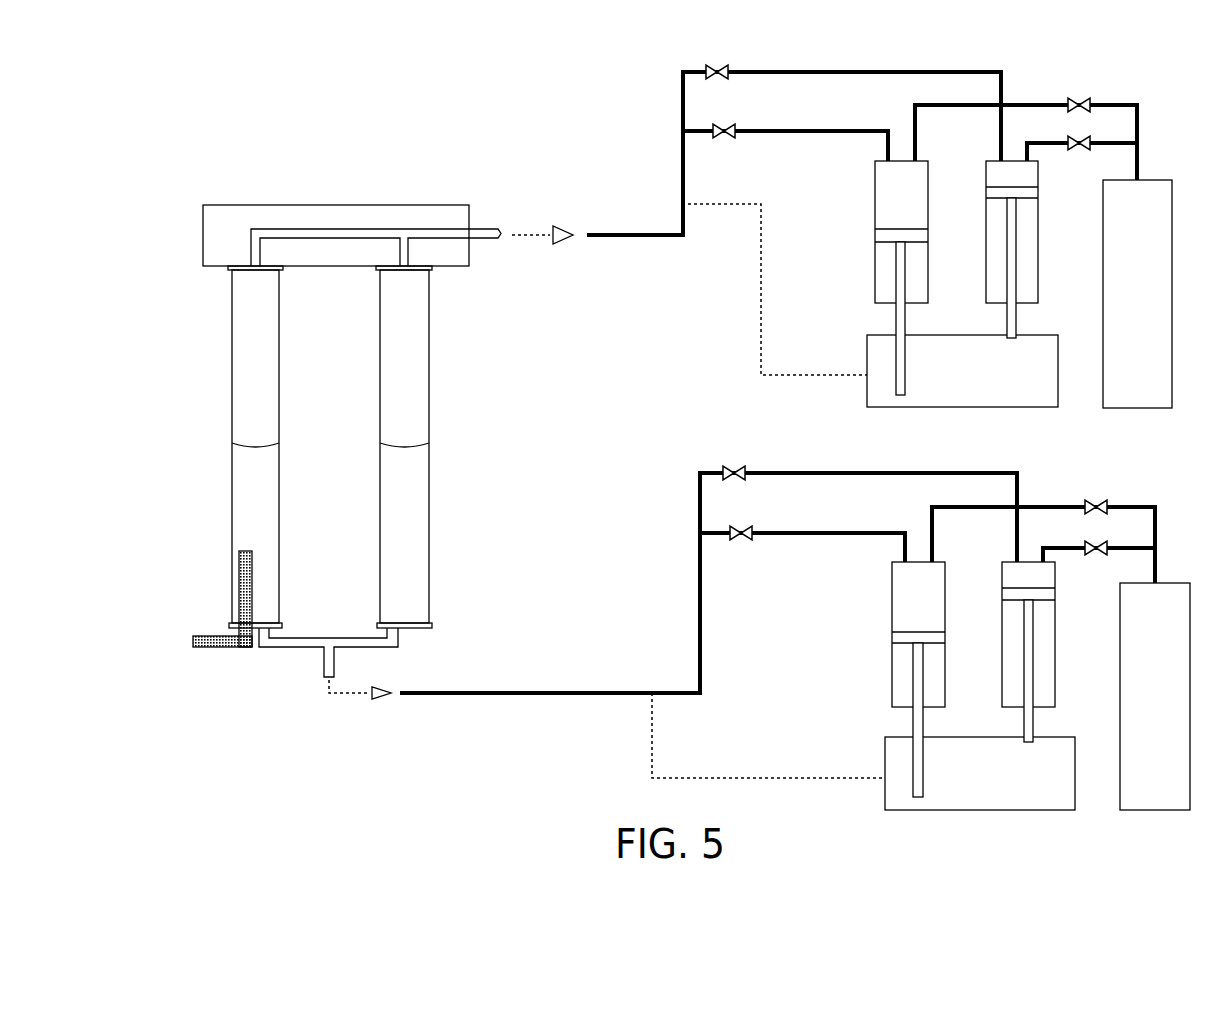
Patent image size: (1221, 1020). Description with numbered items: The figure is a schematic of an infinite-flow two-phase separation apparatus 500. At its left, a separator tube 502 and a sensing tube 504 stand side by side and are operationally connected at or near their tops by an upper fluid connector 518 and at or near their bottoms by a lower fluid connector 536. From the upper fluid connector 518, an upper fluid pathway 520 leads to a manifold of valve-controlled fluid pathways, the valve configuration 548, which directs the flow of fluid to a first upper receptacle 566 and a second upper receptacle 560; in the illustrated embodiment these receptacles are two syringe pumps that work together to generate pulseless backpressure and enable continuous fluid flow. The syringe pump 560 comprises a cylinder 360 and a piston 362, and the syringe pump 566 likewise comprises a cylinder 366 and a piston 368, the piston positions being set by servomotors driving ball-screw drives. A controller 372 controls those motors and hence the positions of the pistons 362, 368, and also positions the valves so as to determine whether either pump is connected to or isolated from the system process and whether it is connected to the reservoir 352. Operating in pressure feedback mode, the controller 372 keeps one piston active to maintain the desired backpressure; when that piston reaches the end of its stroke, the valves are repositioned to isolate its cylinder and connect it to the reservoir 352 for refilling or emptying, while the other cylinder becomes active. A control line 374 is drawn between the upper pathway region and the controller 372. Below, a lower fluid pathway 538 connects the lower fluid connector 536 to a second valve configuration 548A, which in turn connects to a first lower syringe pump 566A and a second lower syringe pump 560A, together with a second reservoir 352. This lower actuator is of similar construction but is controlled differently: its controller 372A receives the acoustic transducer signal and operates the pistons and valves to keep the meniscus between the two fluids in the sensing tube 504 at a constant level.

The infinite-flow two-phase separation apparatus 500 is at (158, 113).
The separator tube 502 is at (203, 440).
The sensing tube 504 is at (478, 446).
The upper fluid connector 518 is at (338, 229).
The upper fluid pathway 520 is at (632, 232).
The lower fluid connector 536 is at (300, 648).
The lower fluid pathway 538 is at (572, 692).
The valve configuration 548 is at (645, 106).
The valve configuration 548A is at (670, 505).
The reservoir 352 is at (1163, 218).
The cylinder 360 is at (985, 178).
The piston 362 is at (1012, 260).
The cylinder 366 is at (875, 170).
The piston 368 is at (897, 264).
The controller 372 is at (983, 395).
The controller 372A is at (1013, 797).
The control line 374 is at (759, 300).
The second upper receptacle 560 is at (1022, 236).
The second lower syringe pump 560A is at (1077, 637).
The first upper receptacle 566 is at (852, 270).
The first lower syringe pump 566A is at (866, 630).